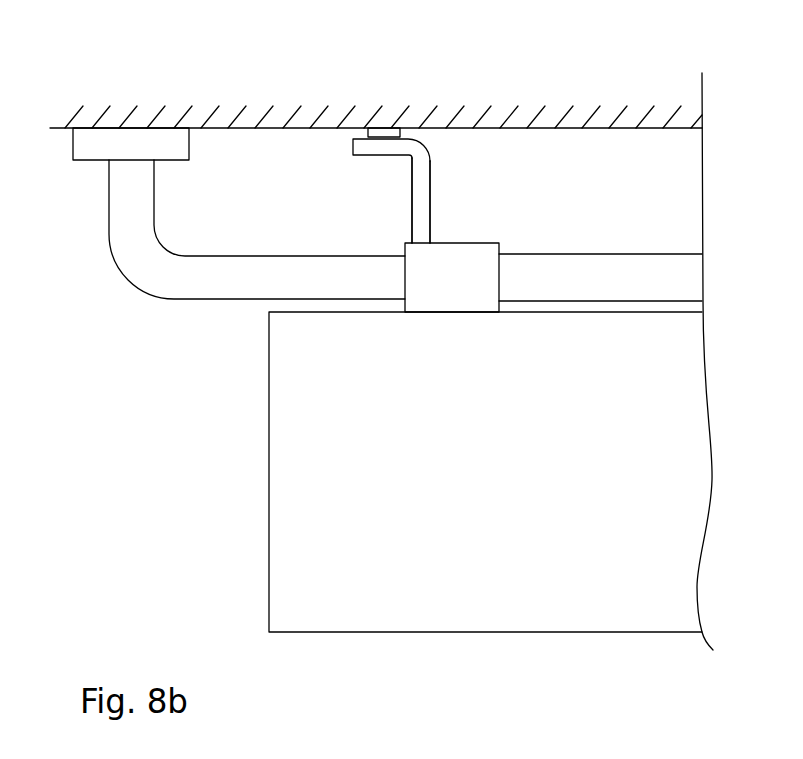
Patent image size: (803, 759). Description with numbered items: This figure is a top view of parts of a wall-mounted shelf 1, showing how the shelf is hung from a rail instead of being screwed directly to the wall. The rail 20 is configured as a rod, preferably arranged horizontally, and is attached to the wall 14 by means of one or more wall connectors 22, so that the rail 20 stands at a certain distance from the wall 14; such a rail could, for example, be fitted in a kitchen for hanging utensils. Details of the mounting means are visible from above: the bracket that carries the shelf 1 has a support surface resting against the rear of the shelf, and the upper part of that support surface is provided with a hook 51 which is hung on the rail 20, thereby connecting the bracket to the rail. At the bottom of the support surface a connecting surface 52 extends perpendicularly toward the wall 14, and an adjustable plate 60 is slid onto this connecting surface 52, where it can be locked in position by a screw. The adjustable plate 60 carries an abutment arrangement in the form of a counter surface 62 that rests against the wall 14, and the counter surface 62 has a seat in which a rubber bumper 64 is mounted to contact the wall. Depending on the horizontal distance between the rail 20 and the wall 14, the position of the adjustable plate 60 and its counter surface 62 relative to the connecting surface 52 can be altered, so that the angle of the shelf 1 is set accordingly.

The shelf 1 is at (378, 615).
The wall 14 is at (310, 125).
The rail 20 is at (213, 287).
The wall connector 22 is at (104, 144).
The hook 51 is at (480, 255).
The connecting surface 52 is at (417, 195).
The adjustable plate 60 is at (421, 200).
The counter surface 62 is at (370, 148).
The rubber bumper 64 is at (385, 128).